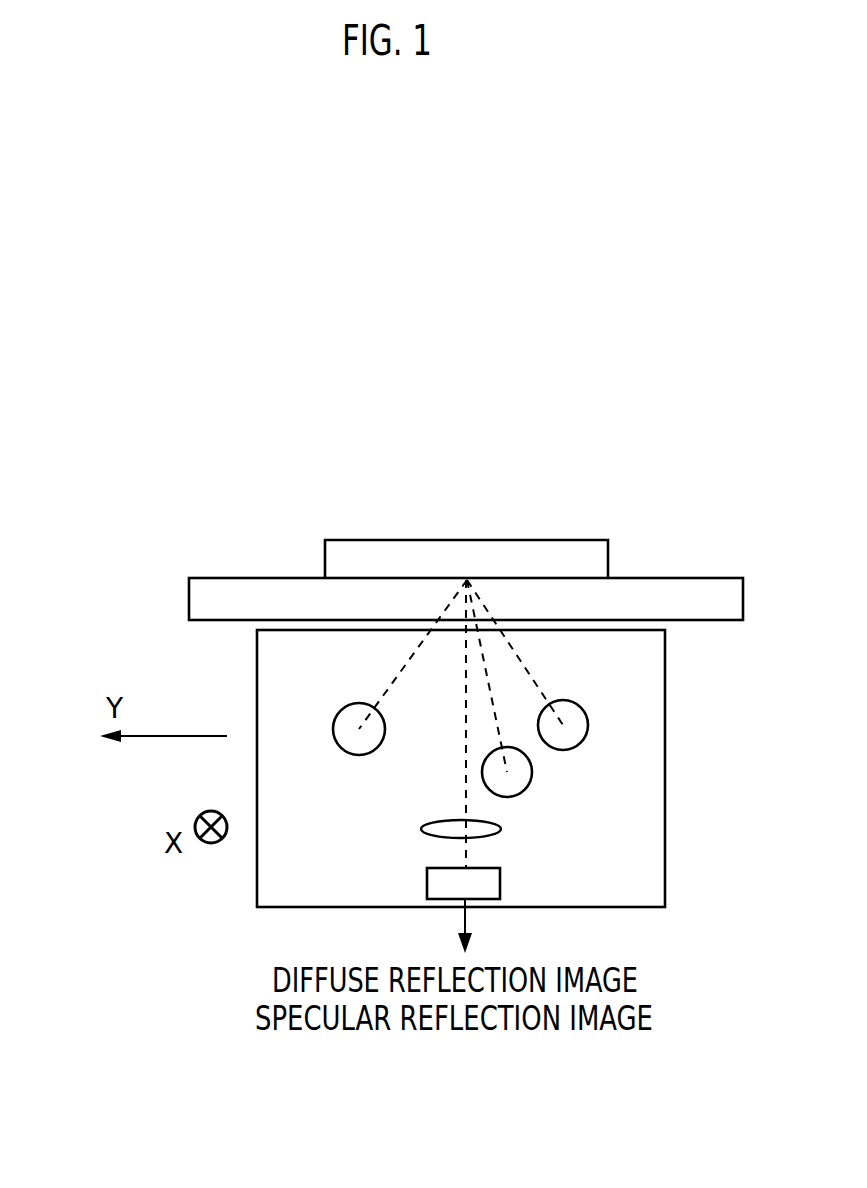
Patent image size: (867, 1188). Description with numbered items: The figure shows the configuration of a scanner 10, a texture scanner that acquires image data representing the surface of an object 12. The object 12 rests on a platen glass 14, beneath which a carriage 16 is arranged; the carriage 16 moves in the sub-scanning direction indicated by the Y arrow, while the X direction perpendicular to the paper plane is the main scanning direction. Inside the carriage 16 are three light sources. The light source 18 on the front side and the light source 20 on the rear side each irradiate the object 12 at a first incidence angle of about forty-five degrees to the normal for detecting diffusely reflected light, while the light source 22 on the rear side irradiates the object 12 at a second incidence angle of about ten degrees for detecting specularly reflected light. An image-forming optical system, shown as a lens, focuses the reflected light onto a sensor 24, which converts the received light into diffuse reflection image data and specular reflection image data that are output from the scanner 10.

The scanner 10 is at (138, 571).
The object 12 is at (575, 540).
The platen glass 14 is at (695, 578).
The carriage 16 is at (665, 771).
The light source 18 is at (342, 749).
The light source 20 is at (580, 707).
The light source 22 is at (532, 777).
The sensor 24 is at (500, 888).